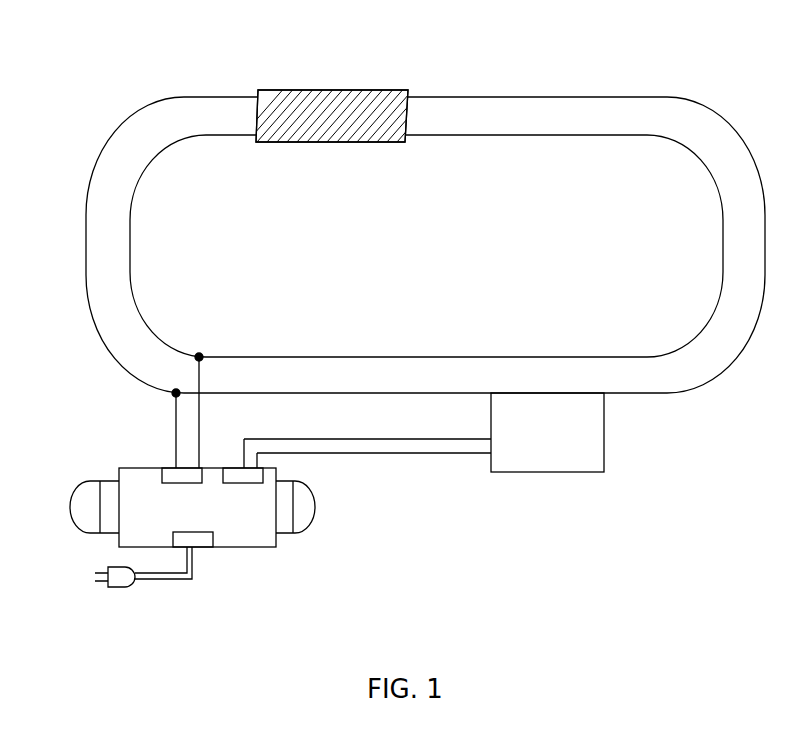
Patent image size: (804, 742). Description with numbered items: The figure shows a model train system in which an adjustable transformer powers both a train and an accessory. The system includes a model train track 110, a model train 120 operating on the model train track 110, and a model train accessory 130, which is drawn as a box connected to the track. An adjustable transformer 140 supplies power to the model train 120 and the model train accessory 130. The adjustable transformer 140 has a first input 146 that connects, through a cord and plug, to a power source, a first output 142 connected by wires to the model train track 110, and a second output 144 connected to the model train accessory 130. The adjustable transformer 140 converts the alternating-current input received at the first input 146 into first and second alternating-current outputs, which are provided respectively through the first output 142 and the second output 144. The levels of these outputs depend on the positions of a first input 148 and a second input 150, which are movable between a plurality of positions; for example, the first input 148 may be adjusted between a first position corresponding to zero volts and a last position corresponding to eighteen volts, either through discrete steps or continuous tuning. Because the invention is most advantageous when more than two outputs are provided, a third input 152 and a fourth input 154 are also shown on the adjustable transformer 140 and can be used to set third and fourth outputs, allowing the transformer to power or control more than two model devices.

The model train track 110 is at (563, 77).
The model train 120 is at (327, 89).
The model train accessory 130 is at (570, 475).
The adjustable transformer 140 is at (270, 585).
The first output 142 is at (192, 485).
The second output 144 is at (238, 485).
The first input 146 is at (213, 537).
The first input 148 is at (317, 502).
The second input 150 is at (70, 502).
The third input 152 is at (285, 535).
The fourth input 154 is at (110, 533).